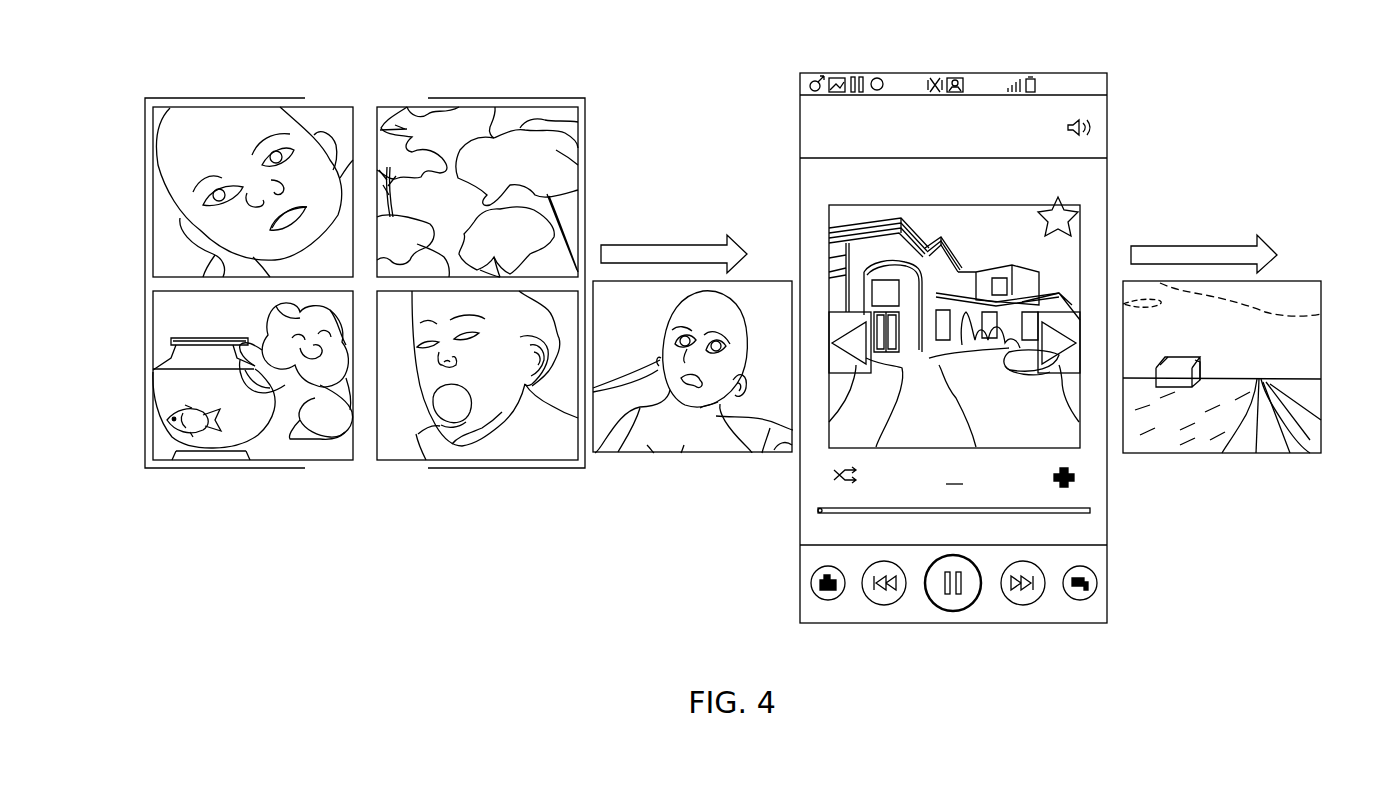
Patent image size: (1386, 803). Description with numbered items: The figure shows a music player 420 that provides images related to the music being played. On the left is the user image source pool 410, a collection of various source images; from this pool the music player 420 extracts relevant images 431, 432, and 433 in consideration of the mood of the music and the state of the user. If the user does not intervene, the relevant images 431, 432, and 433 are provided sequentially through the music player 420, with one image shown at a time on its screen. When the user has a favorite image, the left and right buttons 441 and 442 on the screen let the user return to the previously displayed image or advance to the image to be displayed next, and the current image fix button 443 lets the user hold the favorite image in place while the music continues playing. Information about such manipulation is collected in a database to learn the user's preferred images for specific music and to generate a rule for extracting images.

The user image source pool 410 is at (367, 98).
The music player 420 is at (1107, 105).
The relevant image 431 is at (680, 453).
The relevant image 432 is at (1037, 280).
The relevant image 433 is at (1296, 290).
The left button 441 is at (855, 365).
The right button 442 is at (1062, 365).
The current image fix button 443 is at (1078, 207).